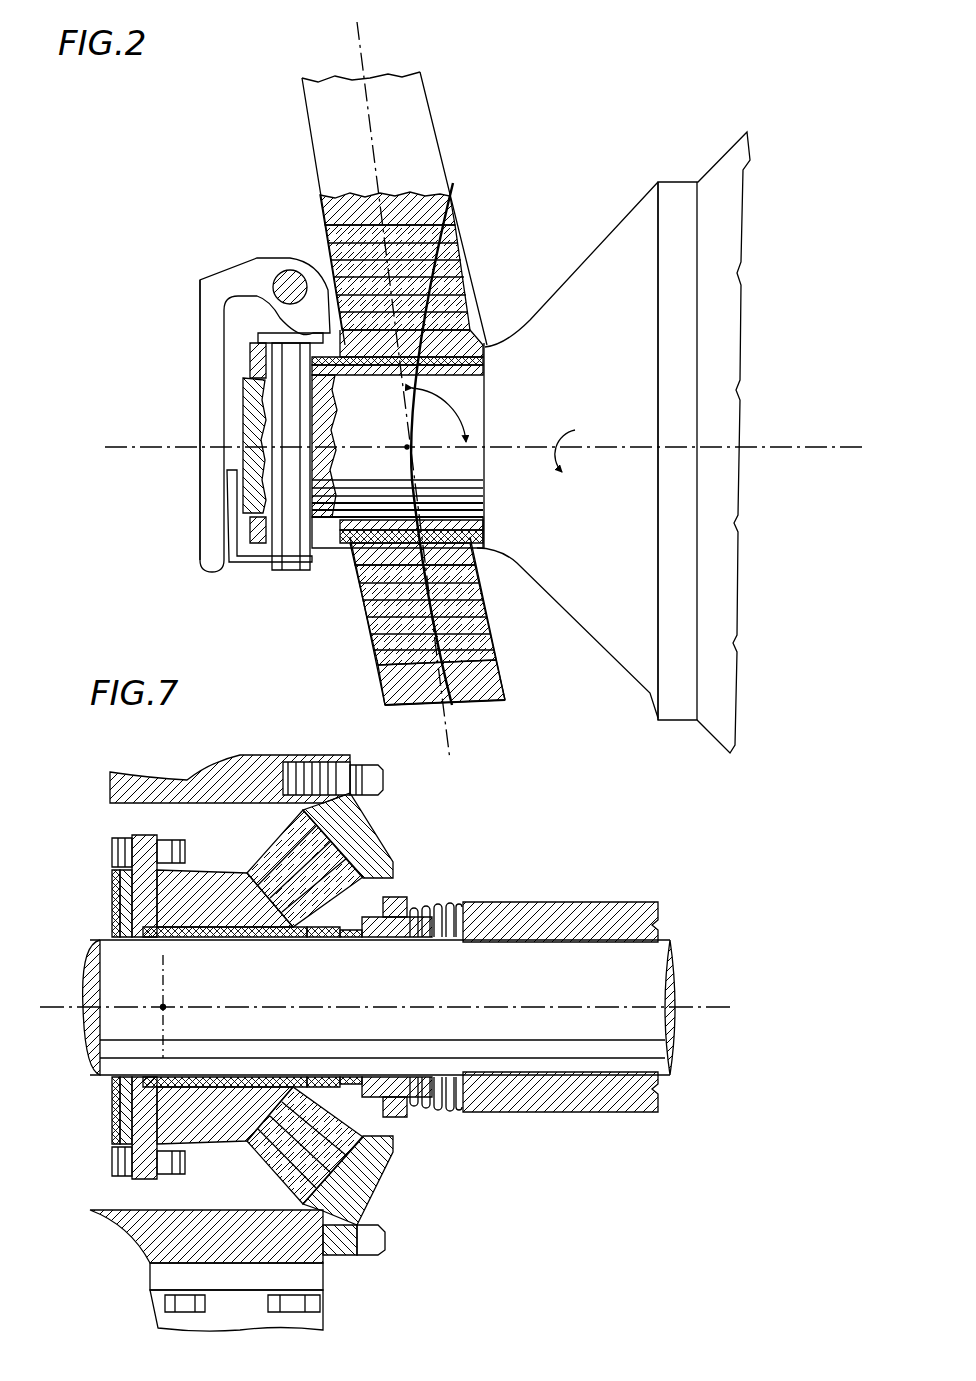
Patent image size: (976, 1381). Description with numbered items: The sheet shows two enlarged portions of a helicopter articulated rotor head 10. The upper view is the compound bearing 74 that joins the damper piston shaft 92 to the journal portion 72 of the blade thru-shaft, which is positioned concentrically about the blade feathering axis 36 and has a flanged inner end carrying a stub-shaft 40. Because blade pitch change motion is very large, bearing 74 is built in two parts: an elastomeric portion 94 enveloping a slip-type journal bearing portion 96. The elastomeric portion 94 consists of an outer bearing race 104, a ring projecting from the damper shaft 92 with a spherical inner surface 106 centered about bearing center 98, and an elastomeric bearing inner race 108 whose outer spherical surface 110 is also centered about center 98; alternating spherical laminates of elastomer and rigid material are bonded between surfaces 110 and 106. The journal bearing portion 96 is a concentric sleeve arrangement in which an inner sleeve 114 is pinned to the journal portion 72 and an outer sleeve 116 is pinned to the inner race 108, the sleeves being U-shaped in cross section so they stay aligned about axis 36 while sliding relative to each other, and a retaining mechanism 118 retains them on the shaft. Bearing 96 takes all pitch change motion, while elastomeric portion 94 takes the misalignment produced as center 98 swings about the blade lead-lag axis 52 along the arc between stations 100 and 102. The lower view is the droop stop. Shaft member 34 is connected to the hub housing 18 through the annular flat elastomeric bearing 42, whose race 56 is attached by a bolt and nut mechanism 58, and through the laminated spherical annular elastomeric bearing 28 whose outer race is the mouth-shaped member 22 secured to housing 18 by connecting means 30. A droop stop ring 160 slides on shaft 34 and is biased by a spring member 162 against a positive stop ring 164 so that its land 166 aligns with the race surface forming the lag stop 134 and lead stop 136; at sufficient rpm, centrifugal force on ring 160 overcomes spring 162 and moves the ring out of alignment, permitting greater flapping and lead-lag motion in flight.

In FIG. 7, the helicopter articulated rotor head 10 is at (287, 735).
In FIG. 7, the housing 18 is at (187, 778).
In FIG. 7, the mouth-shaped member 22 is at (395, 836).
In FIG. 7, the laminated spherical annular elastomeric bearing 28 is at (290, 840).
In FIG. 7, the connecting means 30 is at (385, 778).
In FIG. 7, the shaft member 34 is at (95, 955).
In FIG. 2, the blade feathering axis 36 is at (600, 447).
In FIG. 7, the blade feathering axis 36 is at (617, 992).
In FIG. 2, the stub-shaft 40 is at (615, 247).
In FIG. 7, the annular flat elastomeric bearing 42 is at (112, 900).
In FIG. 7, the blade lead-lag axis 52 is at (163, 1007).
In FIG. 7, the race 56 is at (140, 885).
In FIG. 7, the bolt and nut mechanism 58 is at (112, 848).
In FIG. 2, the journal portion 72 is at (335, 418).
In FIG. 2, the bearing 74 is at (332, 224).
In FIG. 2, the damper piston shaft 92 is at (415, 128).
In FIG. 2, the elastomeric portion 94 is at (455, 281).
In FIG. 2, the slip-type journal bearing portion 96 is at (440, 352).
In FIG. 2, the bearing center 98 is at (407, 447).
In FIG. 2, the station 100 is at (440, 708).
In FIG. 2, the station 102 is at (457, 188).
In FIG. 2, the outer bearing race 104 is at (503, 682).
In FIG. 2, the spherical inner surface 106 is at (496, 646).
In FIG. 2, the elastomeric bearing inner race 108 is at (490, 538).
In FIG. 2, the outer spherical surface 110 is at (498, 561).
In FIG. 2, the inner sleeve 114 is at (470, 500).
In FIG. 2, the outer sleeve 116 is at (485, 520).
In FIG. 2, the retaining mechanism 118 is at (200, 350).
In FIG. 7, the lag stop 134 is at (395, 1131).
In FIG. 7, the lead stop 136 is at (400, 897).
In FIG. 7, the droop stop ring 160 is at (395, 933).
In FIG. 7, the spring member 162 is at (450, 897).
In FIG. 7, the positive stop ring 164 is at (345, 935).
In FIG. 7, the land 166 is at (405, 905).